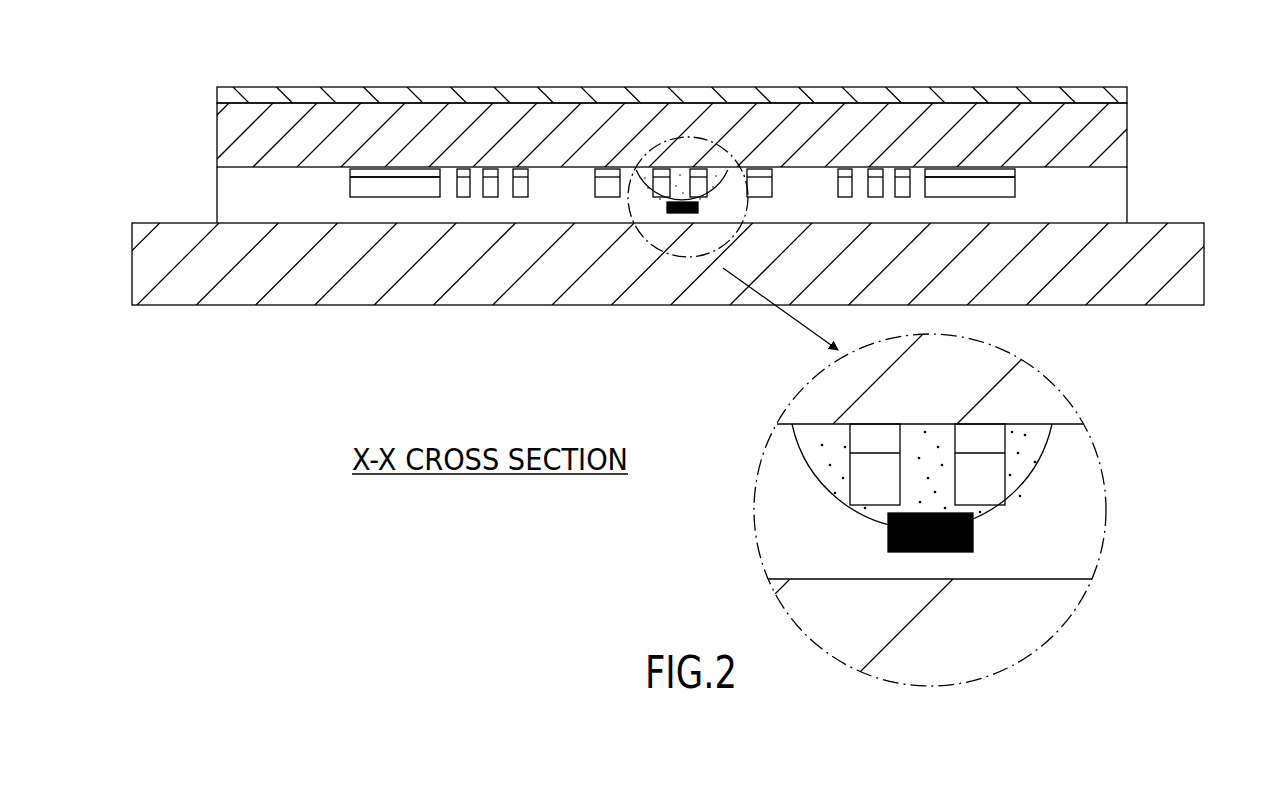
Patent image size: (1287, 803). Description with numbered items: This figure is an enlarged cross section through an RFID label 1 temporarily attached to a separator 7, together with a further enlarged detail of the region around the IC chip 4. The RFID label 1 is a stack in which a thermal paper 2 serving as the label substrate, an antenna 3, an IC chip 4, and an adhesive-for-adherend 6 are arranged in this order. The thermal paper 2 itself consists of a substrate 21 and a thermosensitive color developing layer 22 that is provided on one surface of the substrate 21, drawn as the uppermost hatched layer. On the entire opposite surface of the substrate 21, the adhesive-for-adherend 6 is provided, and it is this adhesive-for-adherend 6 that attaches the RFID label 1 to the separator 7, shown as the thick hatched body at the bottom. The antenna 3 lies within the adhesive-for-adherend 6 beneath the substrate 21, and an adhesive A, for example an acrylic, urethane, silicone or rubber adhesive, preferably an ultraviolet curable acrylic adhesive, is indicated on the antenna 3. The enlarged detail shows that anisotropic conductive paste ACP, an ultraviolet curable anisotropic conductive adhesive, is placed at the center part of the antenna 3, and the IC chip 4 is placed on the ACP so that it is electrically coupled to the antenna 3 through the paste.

The RFID label 1 is at (670, 56).
The thermal paper 2 is at (1222, 70).
The substrate 21 is at (1122, 133).
The thermosensitive color developing layer 22 is at (1122, 97).
The antenna 3 is at (367, 188).
The adhesive A is at (362, 172).
The IC chip 4 is at (887, 535).
The adhesive-for-adherend 6 is at (1122, 192).
The separator 7 is at (1195, 258).
The anisotropic conductive paste ACP is at (850, 512).